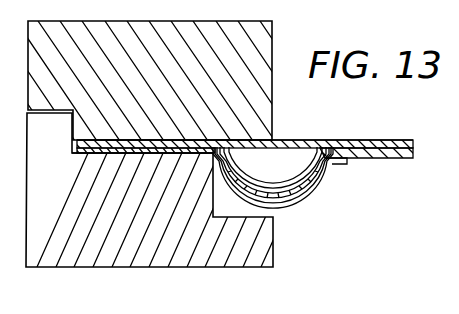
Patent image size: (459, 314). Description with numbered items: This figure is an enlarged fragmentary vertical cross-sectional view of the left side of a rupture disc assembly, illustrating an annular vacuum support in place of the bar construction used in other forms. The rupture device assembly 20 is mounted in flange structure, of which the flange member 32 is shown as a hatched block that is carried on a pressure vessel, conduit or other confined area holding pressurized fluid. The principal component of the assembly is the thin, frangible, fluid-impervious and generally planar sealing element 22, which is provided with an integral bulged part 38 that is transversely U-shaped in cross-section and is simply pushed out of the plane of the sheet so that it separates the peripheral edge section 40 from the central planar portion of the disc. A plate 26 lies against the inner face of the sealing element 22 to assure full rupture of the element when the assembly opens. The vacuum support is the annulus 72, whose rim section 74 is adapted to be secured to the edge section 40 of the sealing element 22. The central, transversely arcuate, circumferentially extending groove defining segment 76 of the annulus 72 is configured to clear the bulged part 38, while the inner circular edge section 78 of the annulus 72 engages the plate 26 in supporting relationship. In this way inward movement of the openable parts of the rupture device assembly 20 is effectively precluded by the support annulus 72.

The rupture device assembly 20 is at (293, 134).
The sealing element 22 is at (414, 143).
The plate 26 is at (403, 153).
The flange member 32 is at (157, 250).
The bulged part 38 is at (283, 183).
The peripheral edge section 40 is at (122, 154).
The annulus 72 is at (295, 208).
The rim section 74 is at (150, 154).
The groove defining segment 76 is at (318, 191).
The inner circular edge section 78 is at (340, 165).